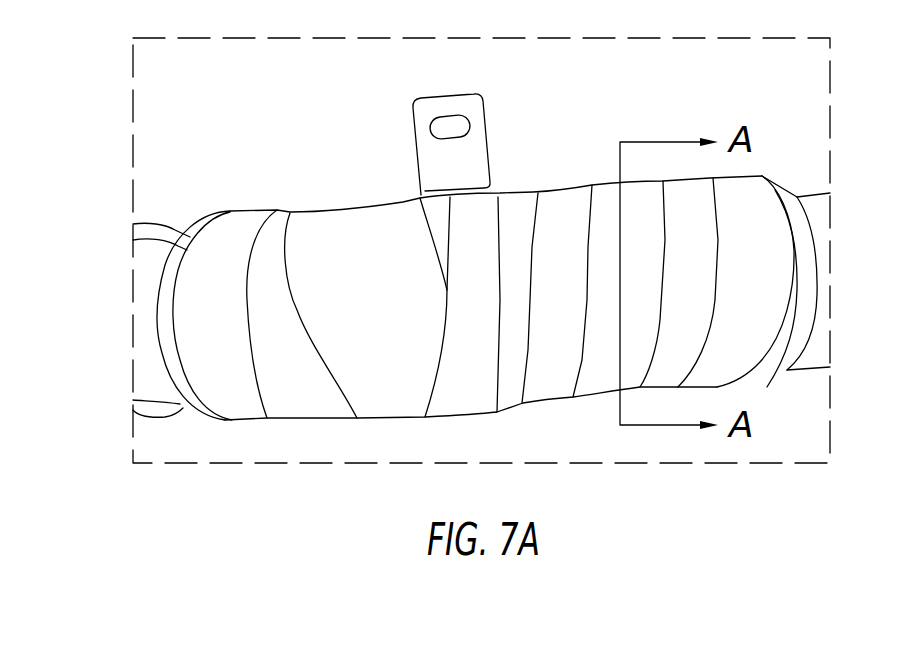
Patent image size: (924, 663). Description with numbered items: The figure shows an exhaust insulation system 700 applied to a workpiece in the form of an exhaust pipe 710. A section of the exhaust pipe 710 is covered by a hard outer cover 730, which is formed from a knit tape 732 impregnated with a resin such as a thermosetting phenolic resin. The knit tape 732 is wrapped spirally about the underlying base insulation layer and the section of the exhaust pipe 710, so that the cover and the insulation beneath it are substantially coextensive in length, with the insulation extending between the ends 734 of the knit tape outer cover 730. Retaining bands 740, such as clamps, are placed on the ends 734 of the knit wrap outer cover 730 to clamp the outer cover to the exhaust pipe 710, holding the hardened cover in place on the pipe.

The exhaust insulation system 700 is at (298, 103).
The exhaust pipe 710 is at (133, 224).
The hard outer cover 730 is at (540, 193).
The knit tape 732 is at (568, 201).
The ends of the knit tape outer cover 734 is at (230, 212).
The retaining bands 740 is at (163, 352).